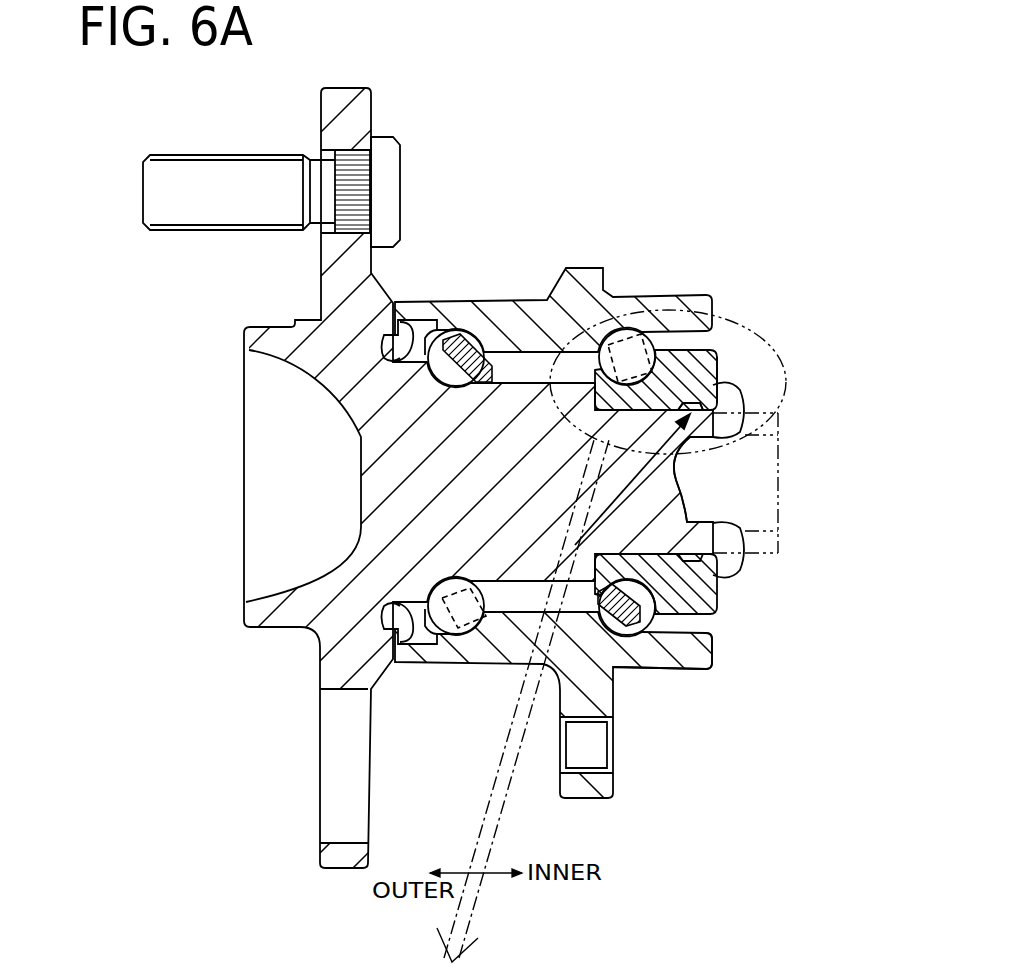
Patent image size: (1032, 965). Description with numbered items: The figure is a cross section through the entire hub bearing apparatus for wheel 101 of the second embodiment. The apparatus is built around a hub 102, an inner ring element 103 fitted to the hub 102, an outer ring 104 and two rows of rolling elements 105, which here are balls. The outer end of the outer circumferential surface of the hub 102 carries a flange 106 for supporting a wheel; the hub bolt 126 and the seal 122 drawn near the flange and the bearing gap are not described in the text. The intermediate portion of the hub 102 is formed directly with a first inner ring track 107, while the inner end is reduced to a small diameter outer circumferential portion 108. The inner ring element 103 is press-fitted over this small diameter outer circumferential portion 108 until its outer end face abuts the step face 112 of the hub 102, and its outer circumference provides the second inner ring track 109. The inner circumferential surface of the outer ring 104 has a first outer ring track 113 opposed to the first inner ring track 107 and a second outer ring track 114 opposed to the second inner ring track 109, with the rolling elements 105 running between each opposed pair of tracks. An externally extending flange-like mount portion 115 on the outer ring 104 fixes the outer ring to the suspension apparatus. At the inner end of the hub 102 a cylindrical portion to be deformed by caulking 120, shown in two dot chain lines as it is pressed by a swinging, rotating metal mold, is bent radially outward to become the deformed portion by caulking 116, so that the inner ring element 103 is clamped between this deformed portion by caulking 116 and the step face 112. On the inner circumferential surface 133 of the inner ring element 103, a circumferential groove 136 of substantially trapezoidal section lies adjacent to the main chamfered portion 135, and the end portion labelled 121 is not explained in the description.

The hub bearing apparatus for wheel 101 is at (545, 196).
The hub 102 is at (315, 337).
The inner ring element 103 is at (688, 350).
The outer ring 104 is at (518, 315).
The rolling elements 105 is at (451, 333).
The flange 106 is at (352, 98).
The first inner ring track 107 is at (545, 387).
The small diameter outer circumferential portion 108 is at (690, 520).
The second inner ring track 109 is at (700, 652).
The step face 112 is at (700, 608).
The first outer ring track 113 is at (462, 332).
The second outer ring track 114 is at (598, 345).
The flange-like mount portion 115 is at (605, 785).
The deformed portion by caulking 116 is at (738, 393).
The cylindrical portion to be deformed by caulking 120 is at (778, 427).
The inner ring outer end portion 121 is at (718, 357).
The seal 122 is at (397, 303).
The hub bolt 126 is at (220, 177).
The inner circumferential surface 133 is at (673, 450).
The main chamfered portion 135 is at (743, 556).
The circumferential groove 136 is at (715, 440).